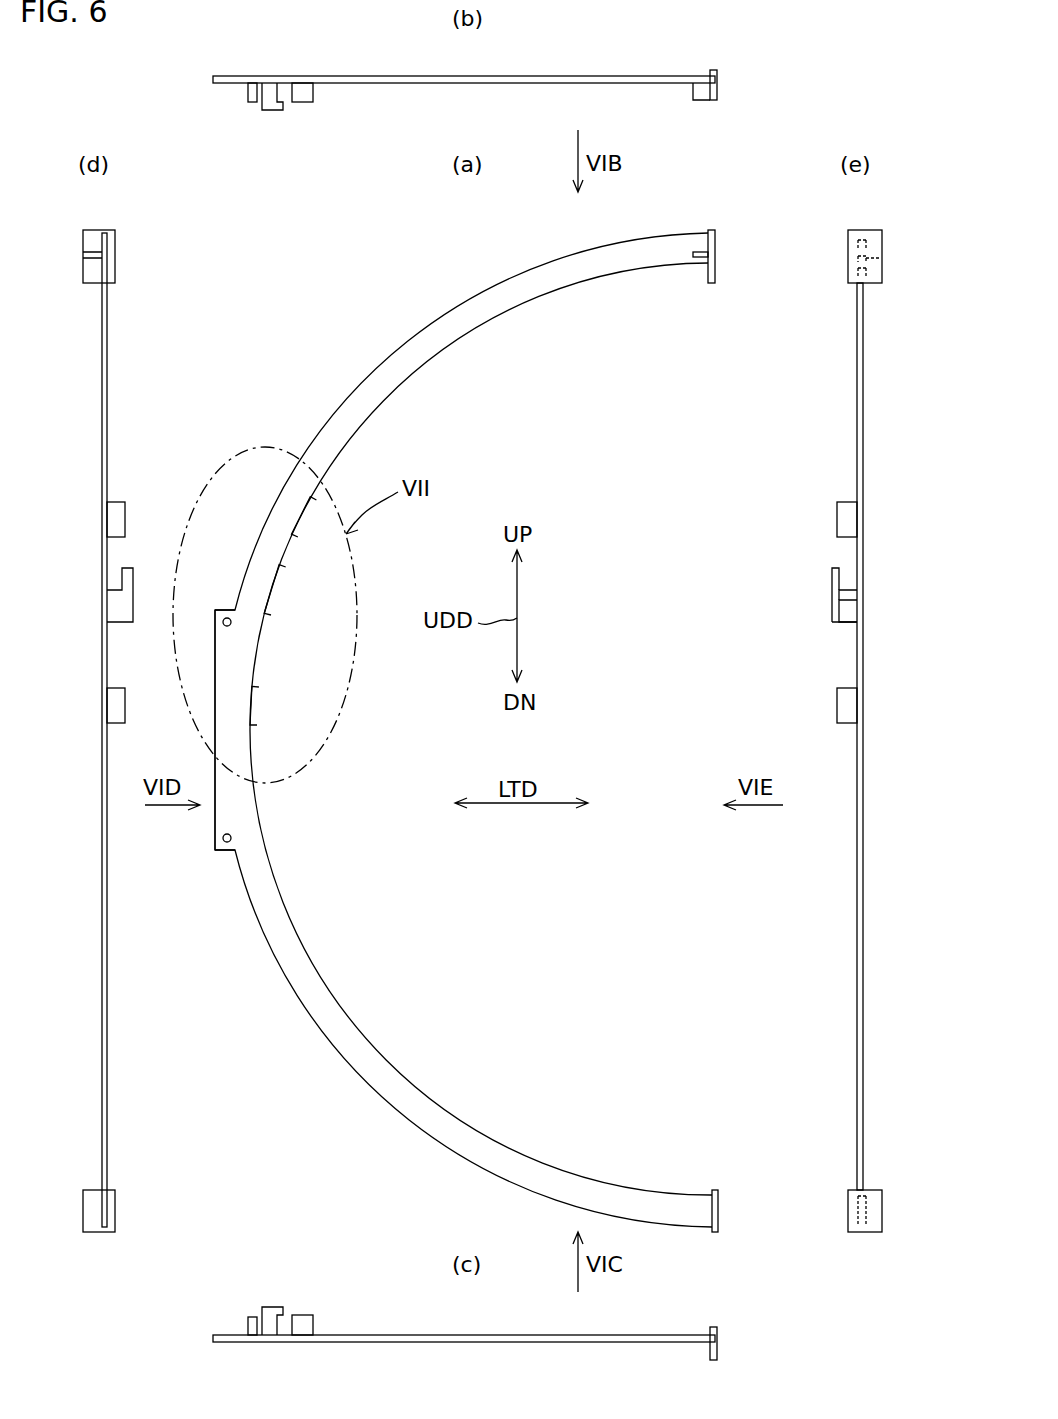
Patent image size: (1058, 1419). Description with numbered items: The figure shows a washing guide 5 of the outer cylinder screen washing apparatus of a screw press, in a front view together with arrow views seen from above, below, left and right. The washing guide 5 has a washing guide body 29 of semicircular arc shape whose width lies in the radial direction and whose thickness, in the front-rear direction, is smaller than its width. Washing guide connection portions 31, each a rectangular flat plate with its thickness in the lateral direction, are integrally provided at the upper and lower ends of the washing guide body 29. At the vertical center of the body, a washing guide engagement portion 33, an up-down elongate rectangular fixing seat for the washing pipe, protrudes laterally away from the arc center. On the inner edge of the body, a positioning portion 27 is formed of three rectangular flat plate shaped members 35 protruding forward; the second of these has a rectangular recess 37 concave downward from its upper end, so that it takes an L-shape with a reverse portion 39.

The washing guide 5 is at (428, 322).
The positioning portion 27 is at (288, 607).
The washing guide body 29 is at (471, 330).
The washing guide connection portions 31 is at (717, 250).
The washing guide engagement portion 33 is at (216, 607).
The rectangular flat plate shaped member 35 is at (838, 518).
The recess 37 is at (858, 580).
The reverse portion 39 is at (831, 582).